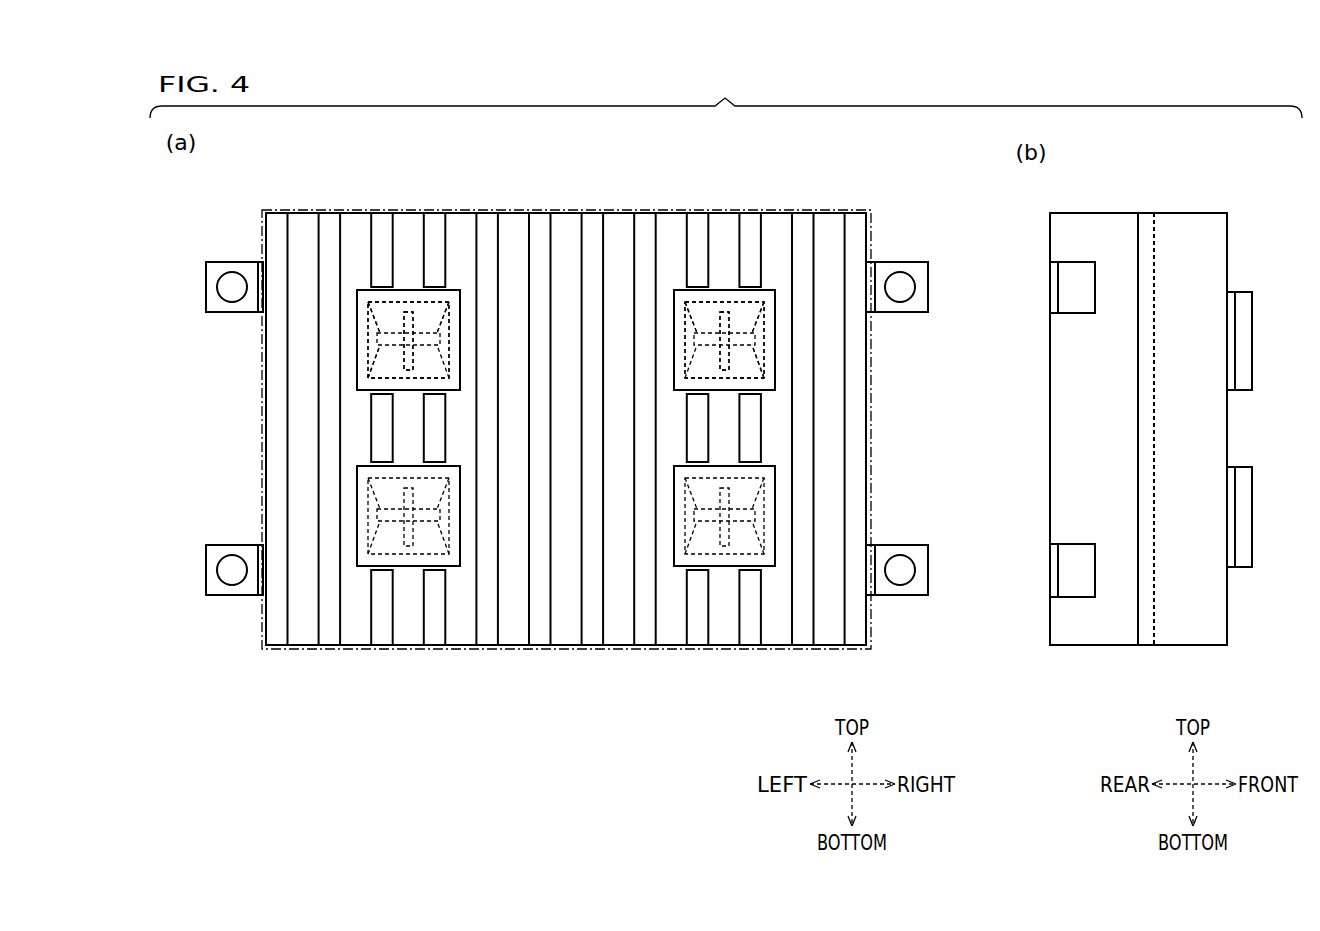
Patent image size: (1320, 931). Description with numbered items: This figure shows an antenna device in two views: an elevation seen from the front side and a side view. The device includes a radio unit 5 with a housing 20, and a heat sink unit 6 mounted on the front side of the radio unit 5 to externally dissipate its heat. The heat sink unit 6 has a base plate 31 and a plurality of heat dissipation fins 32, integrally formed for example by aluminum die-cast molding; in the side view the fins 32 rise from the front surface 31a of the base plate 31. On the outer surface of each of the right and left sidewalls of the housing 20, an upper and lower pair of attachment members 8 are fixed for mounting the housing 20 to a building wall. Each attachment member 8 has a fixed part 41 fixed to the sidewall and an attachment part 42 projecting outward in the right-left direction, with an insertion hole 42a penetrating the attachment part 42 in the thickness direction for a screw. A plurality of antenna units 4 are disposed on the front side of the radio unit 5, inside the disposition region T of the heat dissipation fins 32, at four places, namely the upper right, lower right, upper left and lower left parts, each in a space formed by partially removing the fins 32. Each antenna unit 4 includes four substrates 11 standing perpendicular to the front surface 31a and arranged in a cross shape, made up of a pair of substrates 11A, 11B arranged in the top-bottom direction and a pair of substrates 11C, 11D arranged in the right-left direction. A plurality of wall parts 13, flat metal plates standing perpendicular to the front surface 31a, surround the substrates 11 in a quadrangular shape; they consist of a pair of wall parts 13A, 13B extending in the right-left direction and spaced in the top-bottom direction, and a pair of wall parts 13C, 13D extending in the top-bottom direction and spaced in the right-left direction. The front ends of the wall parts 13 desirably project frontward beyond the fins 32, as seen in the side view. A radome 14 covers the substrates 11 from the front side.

The antenna unit 4 is at (357, 340).
The radio unit 5 is at (1093, 213).
The heat sink unit 6 is at (357, 213).
The attachment member 8 is at (206, 283).
The substrate 11 is at (408, 340).
The substrate 11A is at (406, 312).
The substrate 11B is at (375, 362).
The substrate 11C is at (390, 318).
The substrate 11D is at (448, 312).
The wall part 13 is at (1231, 294).
The wall part 13A is at (722, 312).
The wall part 13B is at (722, 380).
The wall part 13C is at (686, 330).
The wall part 13D is at (768, 328).
The radome 14 is at (430, 362).
The housing 20 is at (1099, 627).
The base plate 31 is at (1148, 640).
The front surface 31a is at (460, 230).
The heat dissipation fin 32 is at (275, 650).
The fixed part 41 is at (258, 273).
The attachment part 42 is at (224, 264).
The insertion hole 42a is at (233, 302).
The disposition region T is at (572, 212).